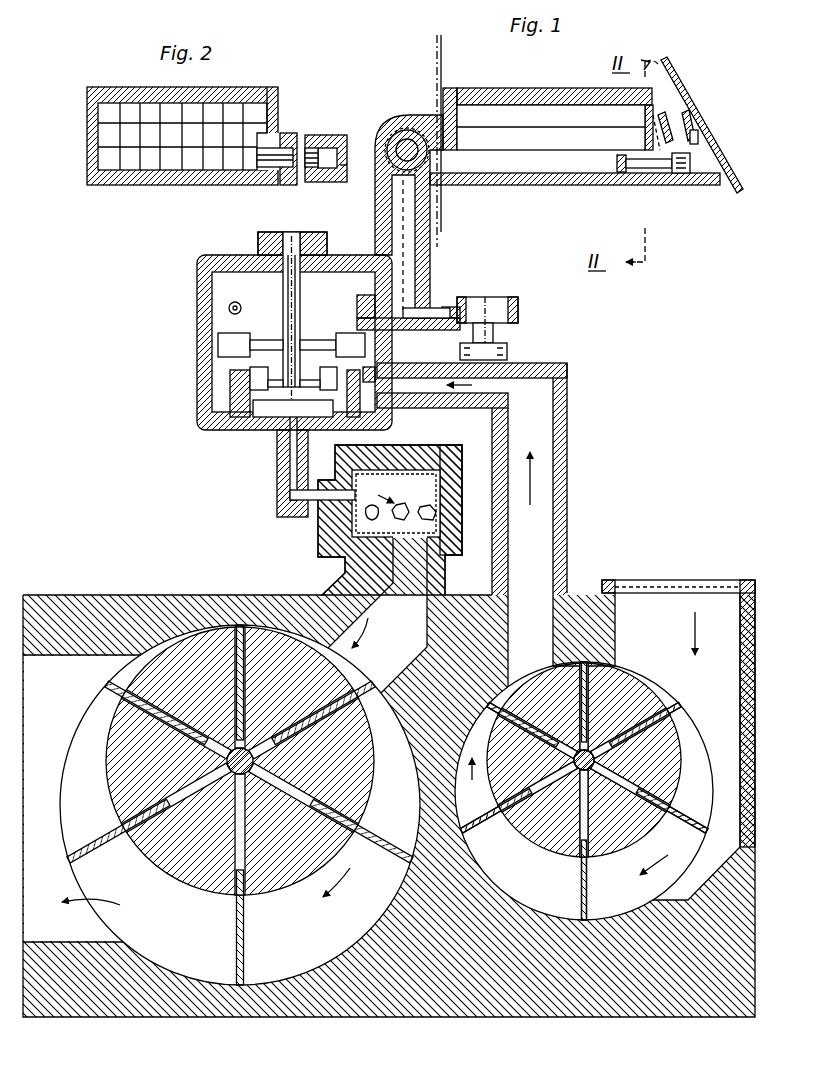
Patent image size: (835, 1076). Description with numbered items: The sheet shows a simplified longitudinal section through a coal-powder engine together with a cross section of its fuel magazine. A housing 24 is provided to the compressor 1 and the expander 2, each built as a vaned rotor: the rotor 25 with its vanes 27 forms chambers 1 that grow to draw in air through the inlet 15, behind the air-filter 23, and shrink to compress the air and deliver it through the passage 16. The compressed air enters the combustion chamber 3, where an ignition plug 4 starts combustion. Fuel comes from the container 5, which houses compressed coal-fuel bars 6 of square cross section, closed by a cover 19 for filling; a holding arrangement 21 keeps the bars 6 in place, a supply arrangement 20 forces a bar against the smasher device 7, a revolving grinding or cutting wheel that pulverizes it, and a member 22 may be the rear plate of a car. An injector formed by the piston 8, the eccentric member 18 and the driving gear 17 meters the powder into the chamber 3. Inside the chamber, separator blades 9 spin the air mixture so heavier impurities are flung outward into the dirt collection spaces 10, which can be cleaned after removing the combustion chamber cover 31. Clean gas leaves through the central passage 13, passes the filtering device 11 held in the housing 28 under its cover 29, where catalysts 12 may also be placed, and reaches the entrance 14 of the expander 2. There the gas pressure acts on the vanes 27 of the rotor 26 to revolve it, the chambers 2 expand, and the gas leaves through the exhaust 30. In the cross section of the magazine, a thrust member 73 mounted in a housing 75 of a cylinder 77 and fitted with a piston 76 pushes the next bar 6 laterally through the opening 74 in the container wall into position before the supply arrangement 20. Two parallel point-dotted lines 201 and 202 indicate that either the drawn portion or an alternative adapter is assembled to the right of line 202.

In FIG. 1, the compressor 1 is at (480, 754).
In FIG. 1, the expander 2 is at (90, 810).
In FIG. 1, the combustion chamber 3 is at (222, 292).
In FIG. 1, the ignition plug 4 is at (229, 312).
In FIG. 1, the container 5 is at (572, 184).
In FIG. 2, the coal-fuel bars 6 is at (130, 164).
In FIG. 1, the coal-fuel bars 6 is at (506, 122).
In FIG. 1, the smasher device 7 is at (392, 156).
In FIG. 1, the injection member 8 is at (420, 306).
In FIG. 1, the separator blades 9 is at (296, 302).
In FIG. 1, the dirt collection spaces 10 is at (214, 393).
In FIG. 1, the filtering device 11 is at (389, 470).
In FIG. 1, the catalysts 12 is at (399, 508).
In FIG. 1, the passage 13 is at (283, 497).
In FIG. 1, the entrance of expander 14 is at (368, 653).
In FIG. 1, the inlet 15 is at (646, 746).
In FIG. 1, the passage 16 is at (548, 512).
In FIG. 1, the gear 17 is at (508, 351).
In FIG. 1, the eccentric member 18 is at (258, 243).
In FIG. 2, the cover 19 is at (112, 88).
In FIG. 1, the cover 19 is at (453, 88).
In FIG. 1, the supply arrangement 20 is at (643, 166).
In FIG. 1, the holding arrangement 21 is at (652, 145).
In FIG. 1, the member 22 is at (731, 195).
In FIG. 1, the air-filter 23 is at (640, 581).
In FIG. 1, the housing 24 is at (392, 1018).
In FIG. 1, the rotor 25 is at (531, 840).
In FIG. 1, the rotor 26 is at (268, 882).
In FIG. 1, the vanes 27 is at (368, 842).
In FIG. 1, the housing 28 is at (320, 543).
In FIG. 1, the cover 29 is at (452, 453).
In FIG. 1, the exhaust 30 is at (62, 884).
In FIG. 1, the combustion chamber cover 31 is at (212, 430).
In FIG. 2, the thrust member 73 is at (257, 162).
In FIG. 2, the filter frame notch 74 is at (290, 148).
In FIG. 2, the housing 75 is at (312, 150).
In FIG. 2, the piston 76 is at (327, 148).
In FIG. 2, the cylinder 77 is at (330, 167).
In FIG. 1, the point-dotted line 201 is at (434, 40).
In FIG. 1, the point-dotted line 202 is at (443, 46).